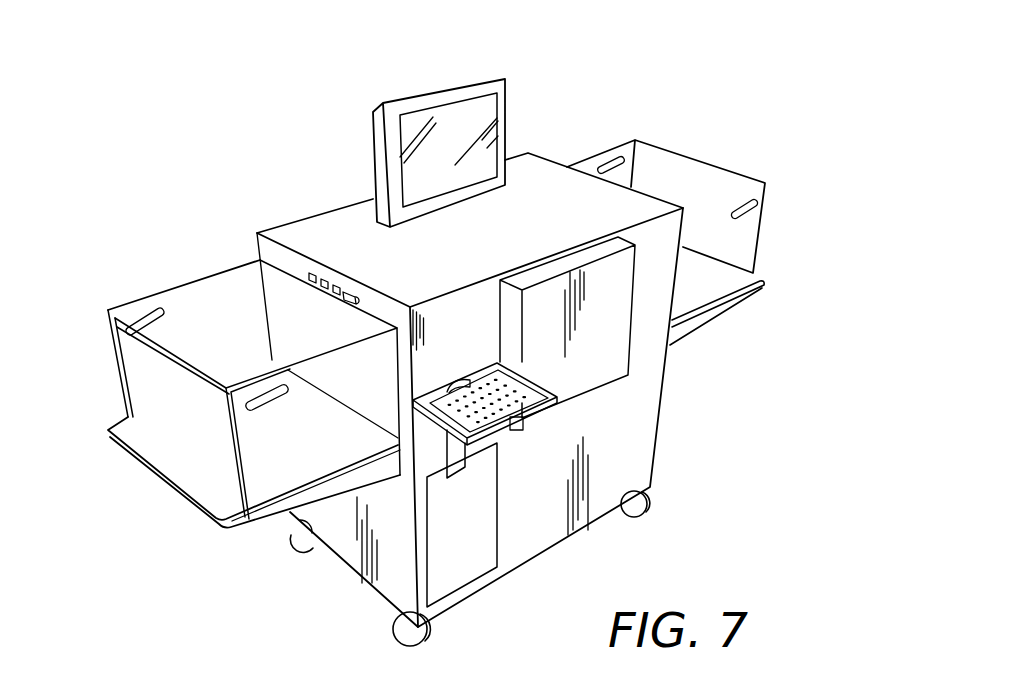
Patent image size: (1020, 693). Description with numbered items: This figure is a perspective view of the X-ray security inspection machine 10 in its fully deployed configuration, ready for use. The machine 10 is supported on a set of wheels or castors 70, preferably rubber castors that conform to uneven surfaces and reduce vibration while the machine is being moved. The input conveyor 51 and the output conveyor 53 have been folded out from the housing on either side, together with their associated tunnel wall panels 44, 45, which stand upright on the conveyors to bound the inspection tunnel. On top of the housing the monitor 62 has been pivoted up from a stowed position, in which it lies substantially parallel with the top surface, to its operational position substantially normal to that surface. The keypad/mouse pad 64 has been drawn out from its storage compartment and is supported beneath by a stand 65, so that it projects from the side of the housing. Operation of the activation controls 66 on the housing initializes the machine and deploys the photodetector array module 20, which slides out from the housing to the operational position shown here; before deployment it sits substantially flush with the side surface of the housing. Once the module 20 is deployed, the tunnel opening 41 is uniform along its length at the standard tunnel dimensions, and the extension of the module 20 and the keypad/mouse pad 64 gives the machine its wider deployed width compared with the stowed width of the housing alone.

The X-ray security inspection machine 10 is at (196, 224).
The photodetector array module 20 is at (607, 373).
The tunnel opening 41 is at (135, 358).
The tunnel wall panel 44 is at (190, 287).
The tunnel wall panel 45 is at (707, 173).
The input conveyor 51 is at (230, 523).
The output conveyor 53 is at (717, 315).
The monitor 62 is at (508, 117).
The keypad/mouse pad 64 is at (527, 402).
The stand 65 is at (460, 467).
The activation controls 66 is at (330, 276).
The wheels or castors 70 is at (653, 503).